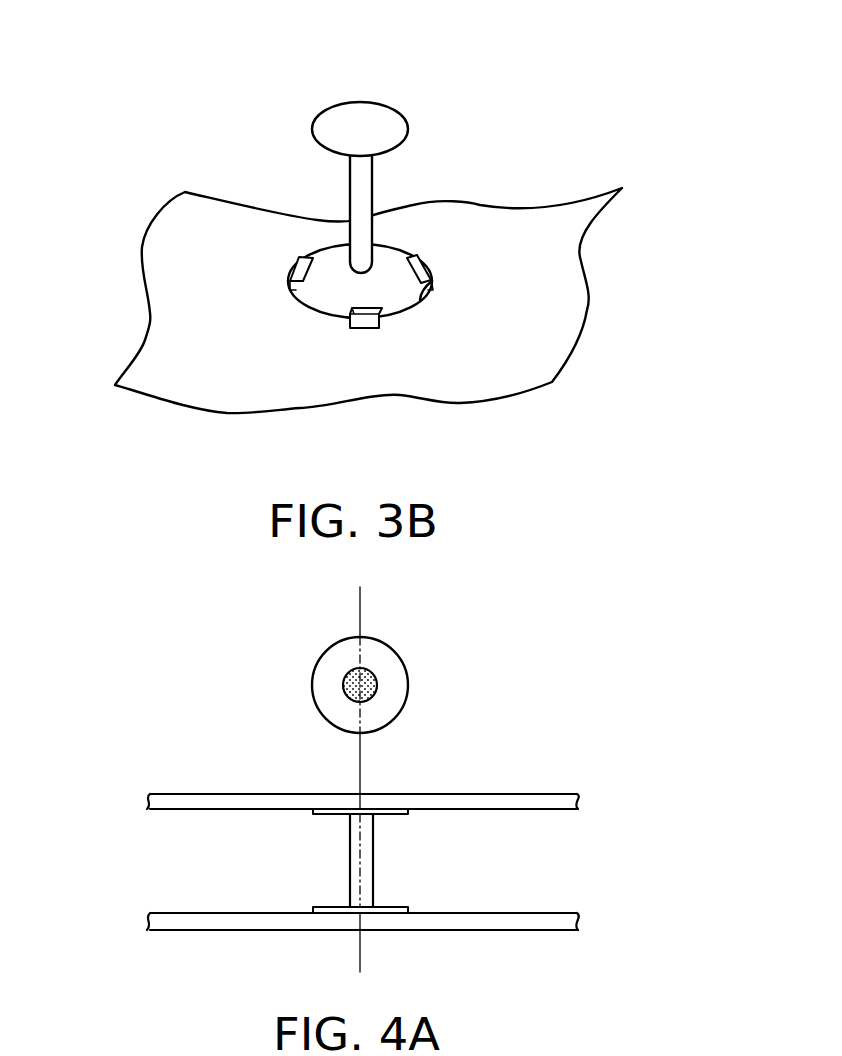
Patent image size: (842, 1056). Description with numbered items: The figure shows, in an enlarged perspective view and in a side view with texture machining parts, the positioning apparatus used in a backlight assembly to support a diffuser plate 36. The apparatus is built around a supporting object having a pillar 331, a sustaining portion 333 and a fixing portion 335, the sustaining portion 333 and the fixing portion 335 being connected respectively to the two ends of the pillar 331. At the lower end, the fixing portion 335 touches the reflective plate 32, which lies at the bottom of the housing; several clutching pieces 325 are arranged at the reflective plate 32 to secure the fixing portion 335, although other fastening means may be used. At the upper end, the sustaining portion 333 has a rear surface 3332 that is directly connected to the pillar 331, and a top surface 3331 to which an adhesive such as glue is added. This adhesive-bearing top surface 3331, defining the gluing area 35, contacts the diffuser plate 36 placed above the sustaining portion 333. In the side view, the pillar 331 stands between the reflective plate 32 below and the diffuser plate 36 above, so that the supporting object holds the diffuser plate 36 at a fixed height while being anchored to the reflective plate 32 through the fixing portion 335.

In FIG. 3B, the reflective plate 32 is at (170, 357).
In FIG. 4A, the reflective plate 32 is at (582, 918).
In FIG. 3B, the clutching pieces 325 is at (365, 333).
In FIG. 3B, the pillar 331 is at (363, 202).
In FIG. 4A, the pillar 331 is at (367, 863).
In FIG. 3B, the sustaining portion 333 is at (367, 118).
In FIG. 3B, the fixing portion 335 is at (425, 305).
In FIG. 4A, the fixing portion 335 is at (400, 913).
In FIG. 4A, the top surface 3331 is at (390, 670).
In FIG. 4A, the rear surface 3332 is at (330, 815).
In FIG. 4A, the gluing area 35 is at (343, 683).
In FIG. 4A, the diffuser plate 36 is at (582, 798).